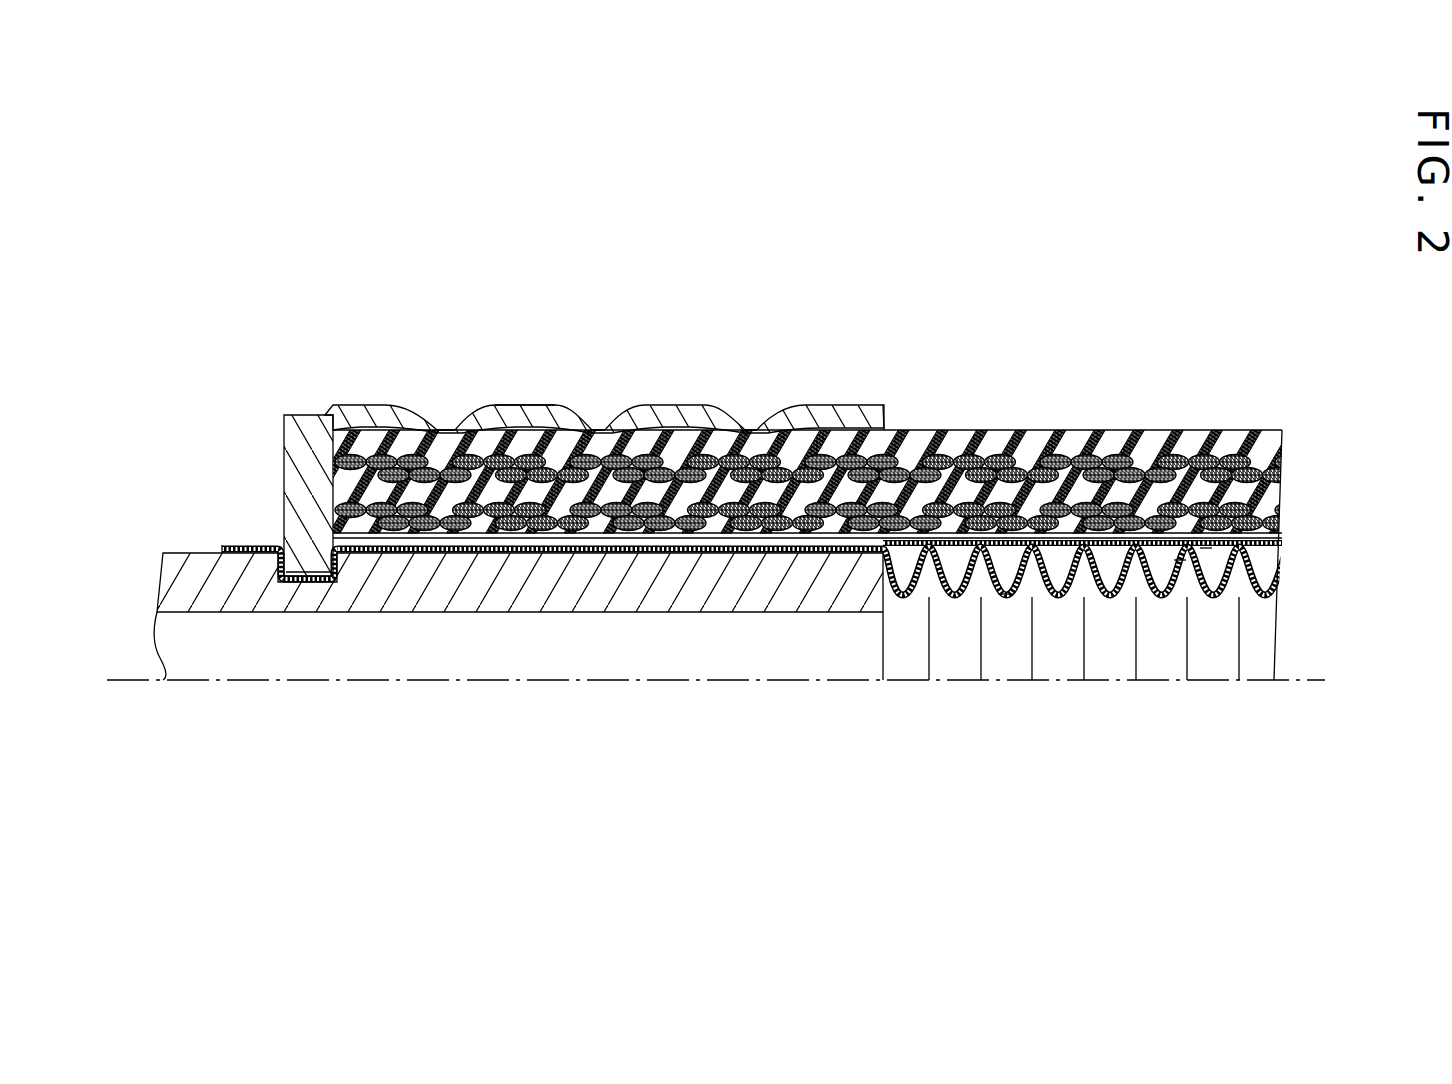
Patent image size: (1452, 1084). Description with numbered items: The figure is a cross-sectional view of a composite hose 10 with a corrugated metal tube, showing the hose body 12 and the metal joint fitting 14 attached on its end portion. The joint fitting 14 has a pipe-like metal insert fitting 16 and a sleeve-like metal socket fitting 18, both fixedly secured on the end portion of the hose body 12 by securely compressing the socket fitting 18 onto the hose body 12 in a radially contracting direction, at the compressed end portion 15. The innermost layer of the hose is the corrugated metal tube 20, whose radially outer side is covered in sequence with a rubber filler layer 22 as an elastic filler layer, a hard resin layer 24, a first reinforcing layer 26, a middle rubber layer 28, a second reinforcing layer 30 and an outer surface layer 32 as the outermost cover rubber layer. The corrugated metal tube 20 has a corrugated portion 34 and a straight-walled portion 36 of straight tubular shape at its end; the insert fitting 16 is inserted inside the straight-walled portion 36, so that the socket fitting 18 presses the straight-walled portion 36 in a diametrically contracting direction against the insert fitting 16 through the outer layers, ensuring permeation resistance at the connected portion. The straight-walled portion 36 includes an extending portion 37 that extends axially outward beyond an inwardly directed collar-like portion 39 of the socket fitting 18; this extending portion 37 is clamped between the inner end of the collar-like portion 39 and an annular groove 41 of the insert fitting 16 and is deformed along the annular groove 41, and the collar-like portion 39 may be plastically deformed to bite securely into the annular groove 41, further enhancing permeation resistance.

The composite hose with a corrugated metal tube 10 is at (987, 292).
The hose body 12 is at (1253, 422).
The metal joint fitting 14 is at (530, 396).
The securely compressed end portion of the hose body 15 is at (450, 430).
The metal insert fitting 16 is at (470, 585).
The metal socket fitting 18 is at (407, 412).
The corrugated metal tube 20 is at (1052, 636).
The rubber filler layer 22 is at (1180, 565).
The hard resin layer 24 is at (1207, 548).
The first reinforcing layer 26 is at (1195, 485).
The middle rubber layer 28 is at (1140, 492).
The second reinforcing layer 30 is at (1062, 457).
The outer surface layer 32 is at (975, 440).
The corrugated portion 34 is at (1005, 608).
The straight-walled portion 36 is at (733, 553).
The extending portion 37 is at (232, 547).
The inwardly directed collar-like portion 39 is at (300, 490).
The annular groove 41 is at (320, 560).